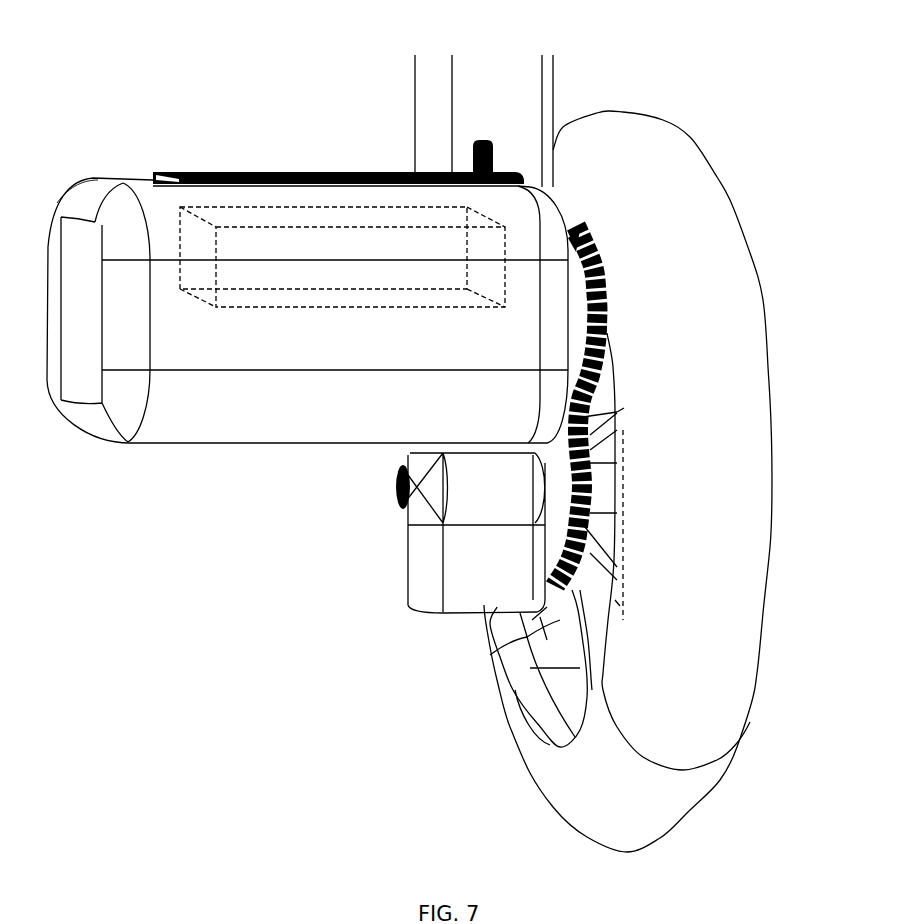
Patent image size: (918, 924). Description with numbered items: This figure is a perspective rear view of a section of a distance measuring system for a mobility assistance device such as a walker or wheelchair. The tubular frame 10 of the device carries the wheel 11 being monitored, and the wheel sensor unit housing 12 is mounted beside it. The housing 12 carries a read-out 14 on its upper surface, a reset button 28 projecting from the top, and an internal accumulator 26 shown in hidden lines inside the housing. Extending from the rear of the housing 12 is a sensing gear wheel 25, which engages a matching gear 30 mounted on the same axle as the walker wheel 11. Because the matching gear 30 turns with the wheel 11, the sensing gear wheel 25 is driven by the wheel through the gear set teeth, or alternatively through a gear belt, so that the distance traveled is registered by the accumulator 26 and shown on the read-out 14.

The tubular frame 10 is at (404, 82).
The wheel 11 is at (742, 167).
The wheel sensor unit housing 12 is at (183, 465).
The readout window 14 is at (276, 161).
The sensing gear wheel 25 is at (616, 282).
The internal accumulator 26 is at (333, 332).
The reset button 28 is at (461, 147).
The matching gear 30 is at (600, 500).